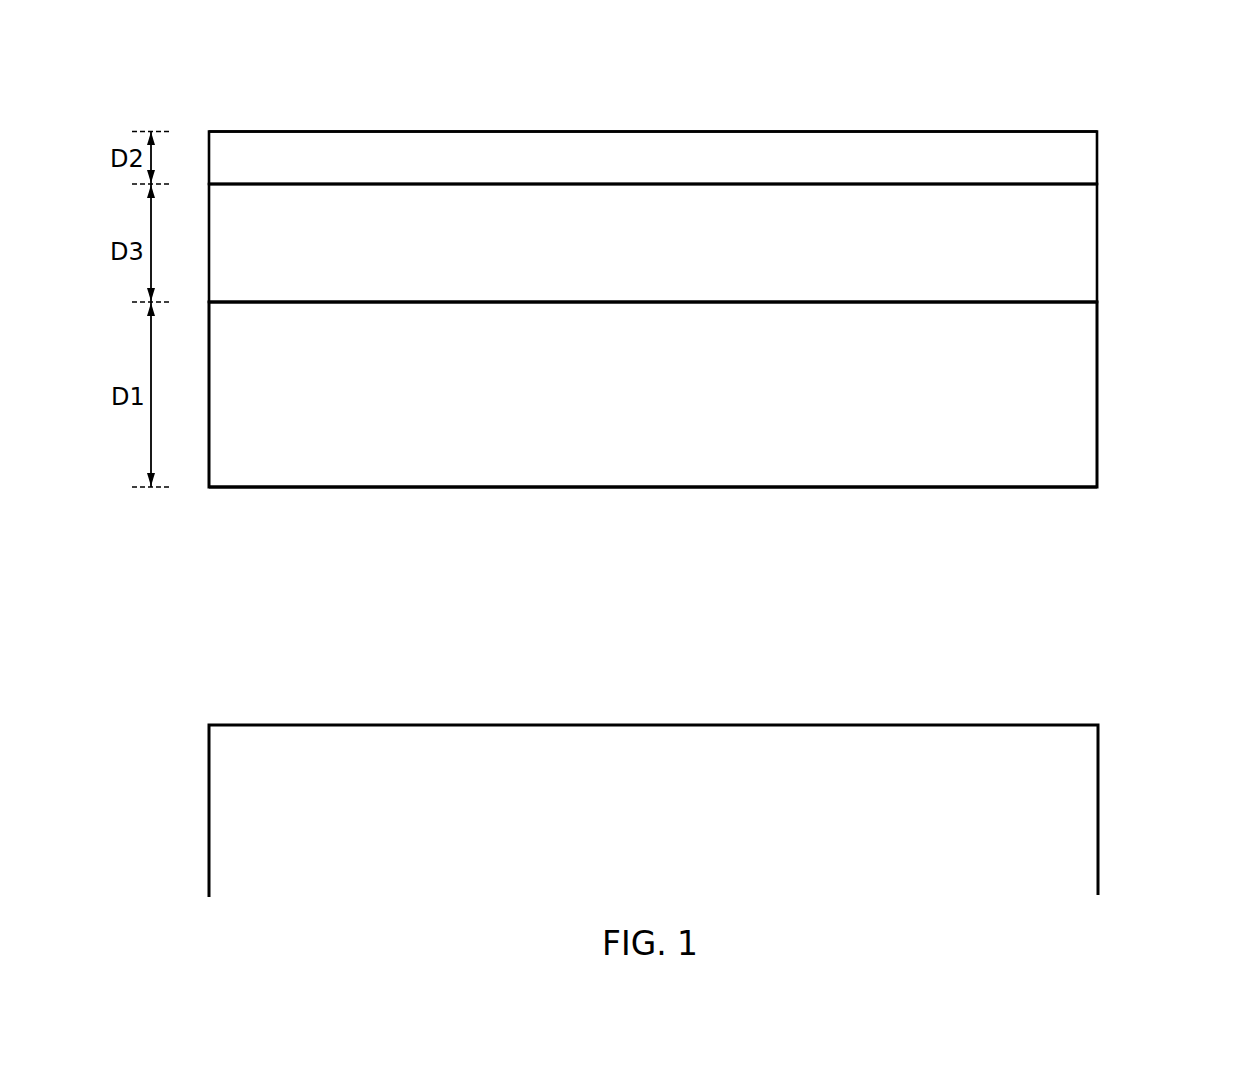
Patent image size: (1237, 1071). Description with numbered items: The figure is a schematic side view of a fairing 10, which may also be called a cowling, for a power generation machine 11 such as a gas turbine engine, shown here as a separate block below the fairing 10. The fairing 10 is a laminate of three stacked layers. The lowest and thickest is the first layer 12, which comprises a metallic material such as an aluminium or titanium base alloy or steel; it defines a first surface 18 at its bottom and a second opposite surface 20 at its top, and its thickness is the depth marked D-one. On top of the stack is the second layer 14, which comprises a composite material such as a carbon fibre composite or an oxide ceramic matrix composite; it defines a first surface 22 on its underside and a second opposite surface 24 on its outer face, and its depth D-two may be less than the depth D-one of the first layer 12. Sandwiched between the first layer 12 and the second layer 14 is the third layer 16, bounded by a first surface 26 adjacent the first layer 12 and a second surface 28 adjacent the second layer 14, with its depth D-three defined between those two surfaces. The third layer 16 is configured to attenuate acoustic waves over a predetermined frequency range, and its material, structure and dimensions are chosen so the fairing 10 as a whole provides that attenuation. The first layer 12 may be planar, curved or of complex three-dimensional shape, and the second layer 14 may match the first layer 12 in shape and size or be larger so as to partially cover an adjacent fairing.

The fairing 10 is at (1150, 87).
The power generation machine 11 is at (1073, 810).
The first layer 12 is at (1080, 402).
The second layer 14 is at (1083, 164).
The third layer 16 is at (1080, 252).
The first surface 18 is at (947, 489).
The second opposite surface 20 is at (942, 304).
The first surface 22 is at (985, 184).
The second opposite surface 24 is at (968, 131).
The first surface 26 is at (300, 302).
The second surface 28 is at (293, 184).